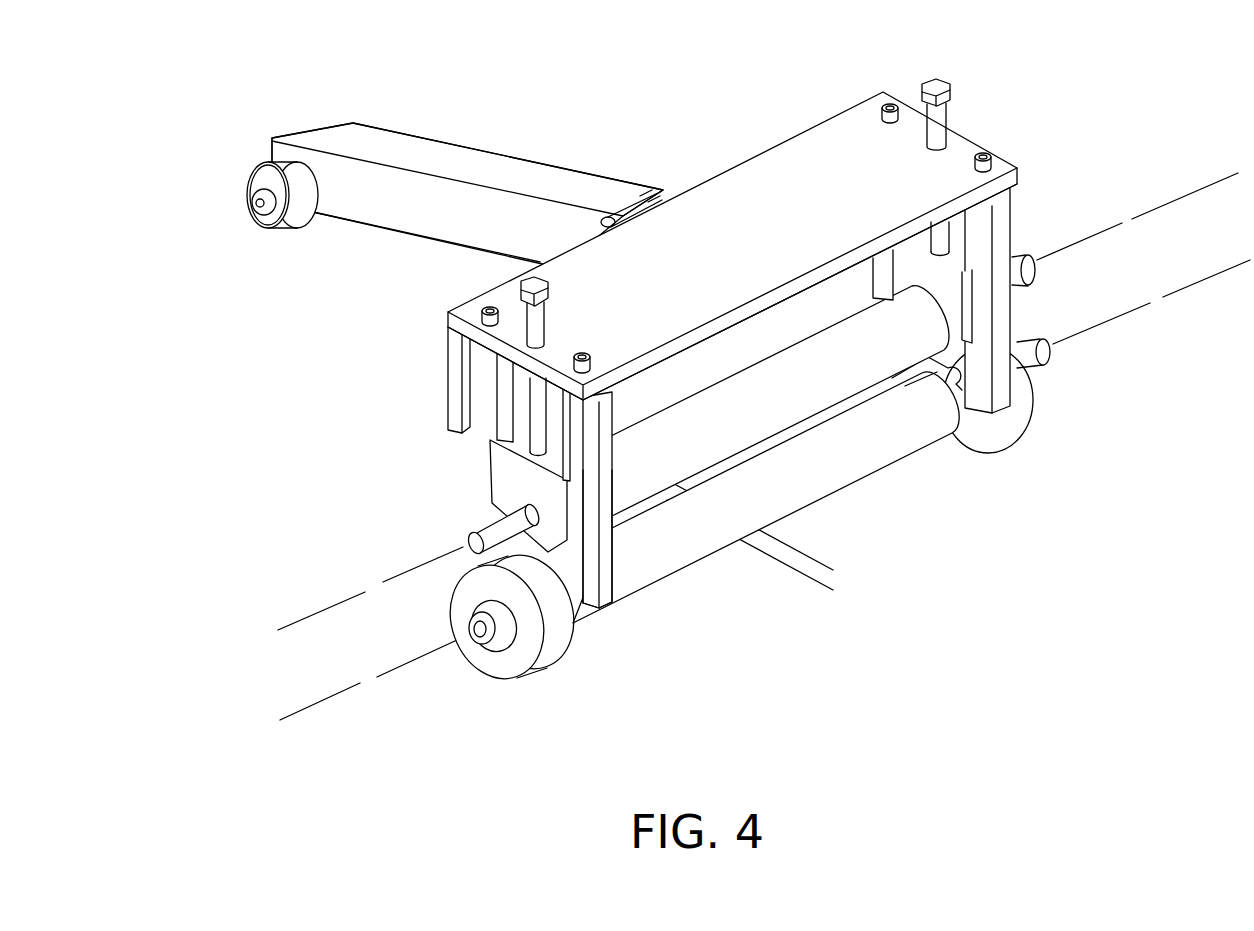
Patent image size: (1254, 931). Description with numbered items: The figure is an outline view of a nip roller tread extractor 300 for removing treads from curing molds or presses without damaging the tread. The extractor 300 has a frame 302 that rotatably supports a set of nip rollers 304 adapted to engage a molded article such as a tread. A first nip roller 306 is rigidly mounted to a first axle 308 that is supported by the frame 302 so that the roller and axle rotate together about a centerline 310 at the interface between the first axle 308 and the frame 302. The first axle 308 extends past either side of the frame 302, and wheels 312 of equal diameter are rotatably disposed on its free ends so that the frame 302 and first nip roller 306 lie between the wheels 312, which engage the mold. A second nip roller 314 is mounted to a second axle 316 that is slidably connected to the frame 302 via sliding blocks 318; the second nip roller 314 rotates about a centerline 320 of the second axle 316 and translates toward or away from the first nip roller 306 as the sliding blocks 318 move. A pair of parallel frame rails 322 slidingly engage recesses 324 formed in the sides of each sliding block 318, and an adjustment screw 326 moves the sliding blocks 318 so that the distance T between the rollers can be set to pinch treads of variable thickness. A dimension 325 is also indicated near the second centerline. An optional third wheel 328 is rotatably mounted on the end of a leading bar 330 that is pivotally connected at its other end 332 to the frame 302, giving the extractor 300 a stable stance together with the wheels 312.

The nip roller tread extractor 300 is at (1068, 105).
The frame 302 is at (1000, 203).
The set of nip rollers 304 is at (378, 627).
The first nip roller 306 is at (883, 433).
The first axle 308 is at (478, 635).
The centerline 310 is at (353, 687).
The wheels 312 is at (558, 640).
The second nip roller 314 is at (760, 413).
The second axle 316 is at (480, 533).
The sliding blocks 318 is at (500, 465).
The centerline 320 is at (317, 613).
The parallel frame rails 322 is at (573, 424).
The recesses 324 is at (570, 478).
The web width 325 is at (1207, 205).
The adjustment screw 326 is at (530, 279).
The third wheel 328 is at (303, 203).
The leading bar 330 is at (440, 163).
The other end 332 is at (665, 190).
The distance T is at (807, 510).